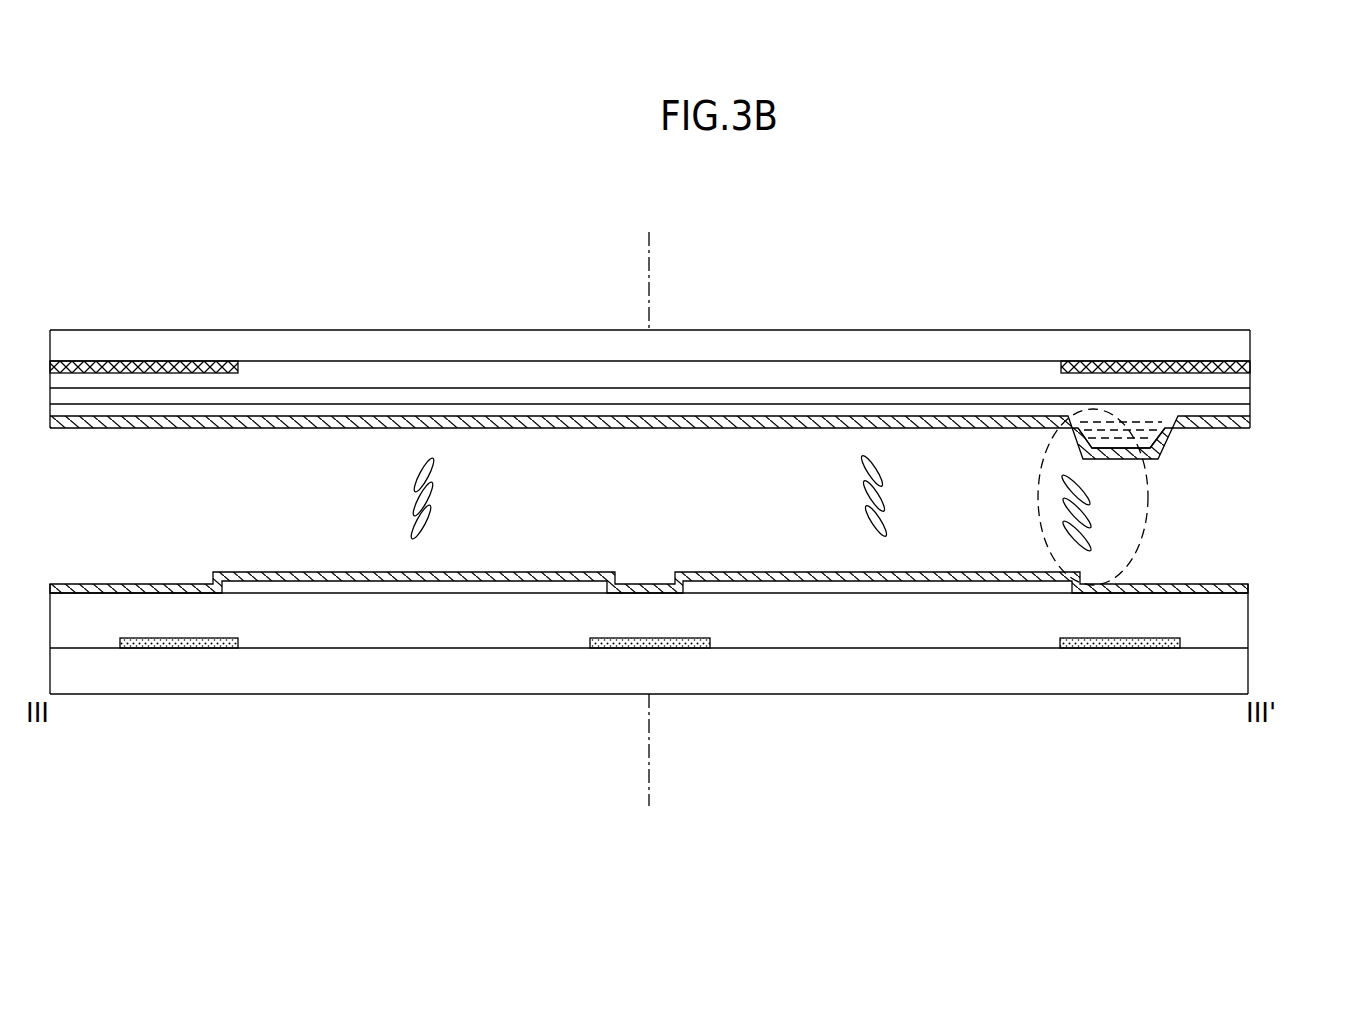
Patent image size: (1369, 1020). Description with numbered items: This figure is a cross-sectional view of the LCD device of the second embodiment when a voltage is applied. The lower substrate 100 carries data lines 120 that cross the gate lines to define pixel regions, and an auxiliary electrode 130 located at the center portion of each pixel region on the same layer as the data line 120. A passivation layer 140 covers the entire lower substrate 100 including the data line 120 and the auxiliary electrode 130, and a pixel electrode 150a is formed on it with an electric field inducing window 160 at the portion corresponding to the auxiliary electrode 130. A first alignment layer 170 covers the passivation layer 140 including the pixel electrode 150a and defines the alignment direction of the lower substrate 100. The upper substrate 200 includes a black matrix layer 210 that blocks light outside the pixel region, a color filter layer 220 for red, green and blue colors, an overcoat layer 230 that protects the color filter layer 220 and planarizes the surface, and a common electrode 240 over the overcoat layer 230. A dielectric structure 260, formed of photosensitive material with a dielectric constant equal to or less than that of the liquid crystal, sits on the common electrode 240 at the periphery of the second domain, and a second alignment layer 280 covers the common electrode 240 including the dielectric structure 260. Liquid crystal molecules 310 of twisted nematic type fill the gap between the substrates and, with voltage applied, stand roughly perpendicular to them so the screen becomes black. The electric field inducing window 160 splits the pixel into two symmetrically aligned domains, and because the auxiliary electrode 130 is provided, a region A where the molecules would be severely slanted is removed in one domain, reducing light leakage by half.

The lower substrate 100 is at (1243, 672).
The data line 120 is at (173, 650).
The auxiliary electrode 130 is at (690, 650).
The passivation layer 140 is at (1243, 622).
The pixel electrode 150a is at (766, 588).
The electric field inducing window 160 is at (642, 588).
The first alignment layer 170 is at (1250, 590).
The upper substrate 200 is at (1028, 340).
The black matrix layer 210 is at (1183, 362).
The color filter layer 220 is at (1252, 362).
The overcoat layer 230 is at (1250, 396).
The common electrode 240 is at (1250, 422).
The dielectric structure 260 is at (1148, 432).
The second alignment layer 280 is at (1215, 420).
The liquid crystal molecules 310 is at (1042, 505).
The region A is at (1148, 507).